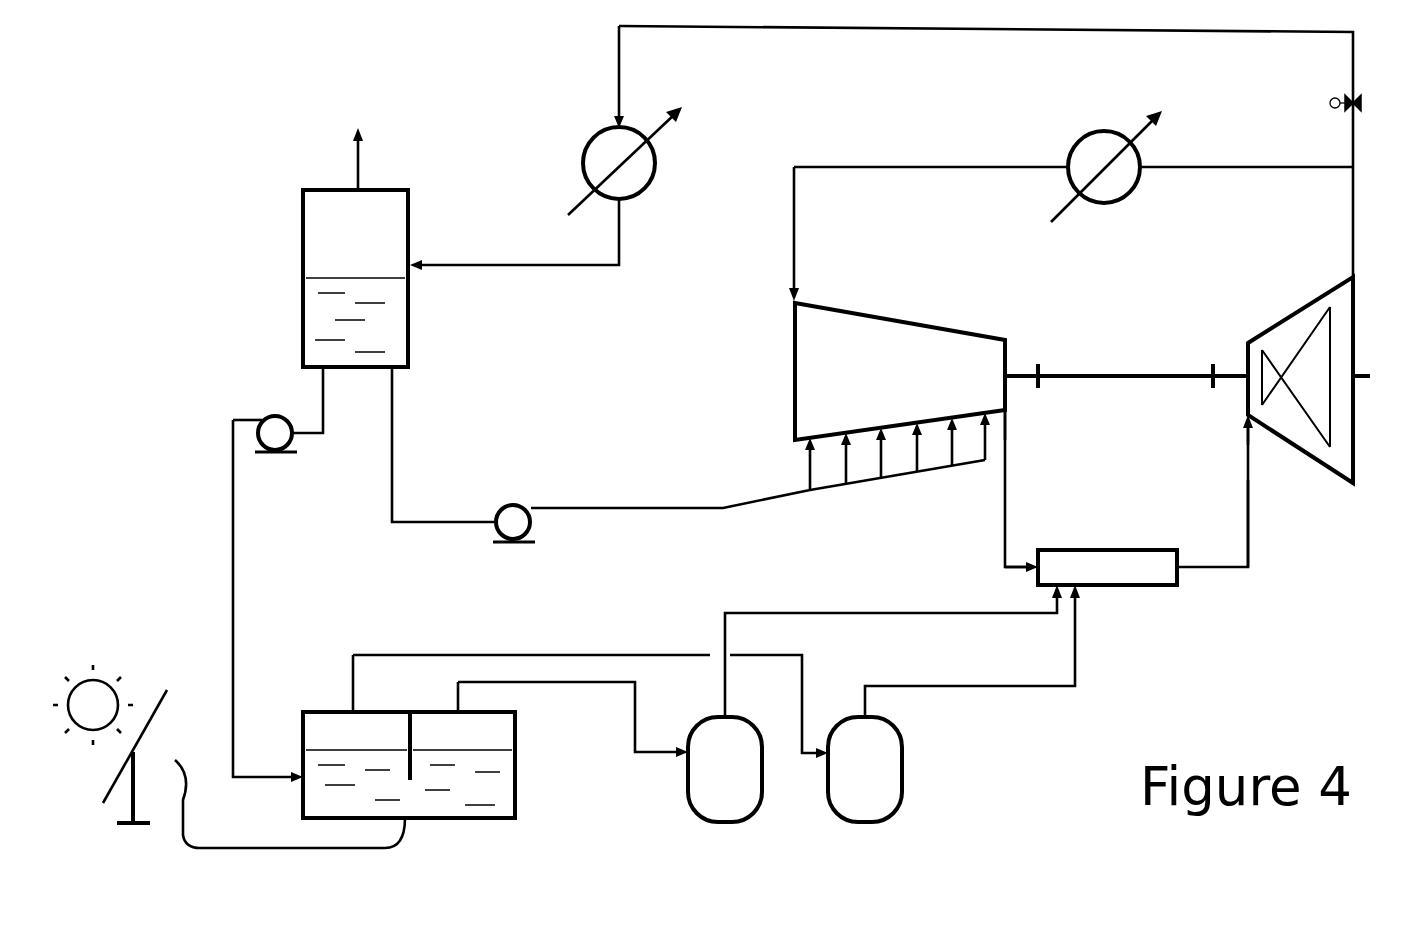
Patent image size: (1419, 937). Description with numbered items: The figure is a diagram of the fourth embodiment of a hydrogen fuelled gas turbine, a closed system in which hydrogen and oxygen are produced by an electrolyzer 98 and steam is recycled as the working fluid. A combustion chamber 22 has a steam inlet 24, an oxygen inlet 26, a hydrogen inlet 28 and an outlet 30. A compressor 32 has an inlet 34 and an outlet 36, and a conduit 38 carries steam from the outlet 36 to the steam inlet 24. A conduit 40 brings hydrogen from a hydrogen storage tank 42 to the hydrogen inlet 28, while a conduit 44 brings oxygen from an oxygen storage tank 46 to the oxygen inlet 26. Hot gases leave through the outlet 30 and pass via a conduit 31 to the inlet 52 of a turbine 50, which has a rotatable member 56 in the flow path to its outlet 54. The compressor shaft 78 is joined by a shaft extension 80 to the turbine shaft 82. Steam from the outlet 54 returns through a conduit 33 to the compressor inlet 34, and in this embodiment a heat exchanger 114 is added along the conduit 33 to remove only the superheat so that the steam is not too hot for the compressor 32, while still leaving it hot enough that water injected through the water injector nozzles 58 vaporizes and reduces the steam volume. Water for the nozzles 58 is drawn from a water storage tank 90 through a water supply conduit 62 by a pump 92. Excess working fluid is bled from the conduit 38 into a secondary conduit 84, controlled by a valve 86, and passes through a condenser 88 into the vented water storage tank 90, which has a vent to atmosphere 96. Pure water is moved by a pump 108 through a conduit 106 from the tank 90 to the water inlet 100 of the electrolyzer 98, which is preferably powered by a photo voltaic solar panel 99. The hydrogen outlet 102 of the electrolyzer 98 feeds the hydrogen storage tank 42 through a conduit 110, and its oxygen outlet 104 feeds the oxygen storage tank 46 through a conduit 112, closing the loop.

The combustion chamber 22 is at (1180, 588).
The steam inlet 24 is at (1028, 555).
The oxygen inlet 26 is at (1085, 597).
The hydrogen inlet 28 is at (1048, 598).
The outlet 30 is at (1187, 562).
The conduit 31 is at (1260, 503).
The compressor 32 is at (872, 302).
The conduit 33 is at (884, 157).
The inlet 34 is at (804, 285).
The outlet 36 is at (1012, 415).
The conduit 38 is at (1012, 478).
The conduit 40 is at (848, 610).
The hydrogen storage tank 42 is at (683, 790).
The conduit 44 is at (1033, 693).
The oxygen storage tank 46 is at (905, 760).
The turbine 50 is at (1295, 305).
The inlet 52 is at (1240, 420).
The outlet 54 is at (1353, 272).
The rotatable member 56 is at (1322, 293).
The water injector nozzles 58 is at (837, 452).
The water supply conduit 62 is at (660, 503).
The shaft 78 is at (1017, 368).
The shaft extension 80 is at (1135, 368).
The shaft 82 is at (1368, 385).
The secondary conduit 84 is at (794, 32).
The valve 86 is at (1335, 97).
The condenser 88 is at (583, 143).
The water storage tank 90 is at (413, 332).
The pump 92 is at (500, 507).
The vent to atmosphere 96 is at (350, 157).
The electrolyzer 98 is at (450, 820).
The photo voltaic solar panel 99 is at (165, 700).
The water inlet 100 is at (298, 790).
The hydrogen outlet 102 is at (450, 700).
The oxygen outlet 104 is at (342, 700).
The conduit 106 is at (243, 668).
The pump 108 is at (278, 466).
The conduit 110 is at (557, 688).
The conduit 112 is at (590, 650).
The heat exchanger 114 is at (1078, 138).